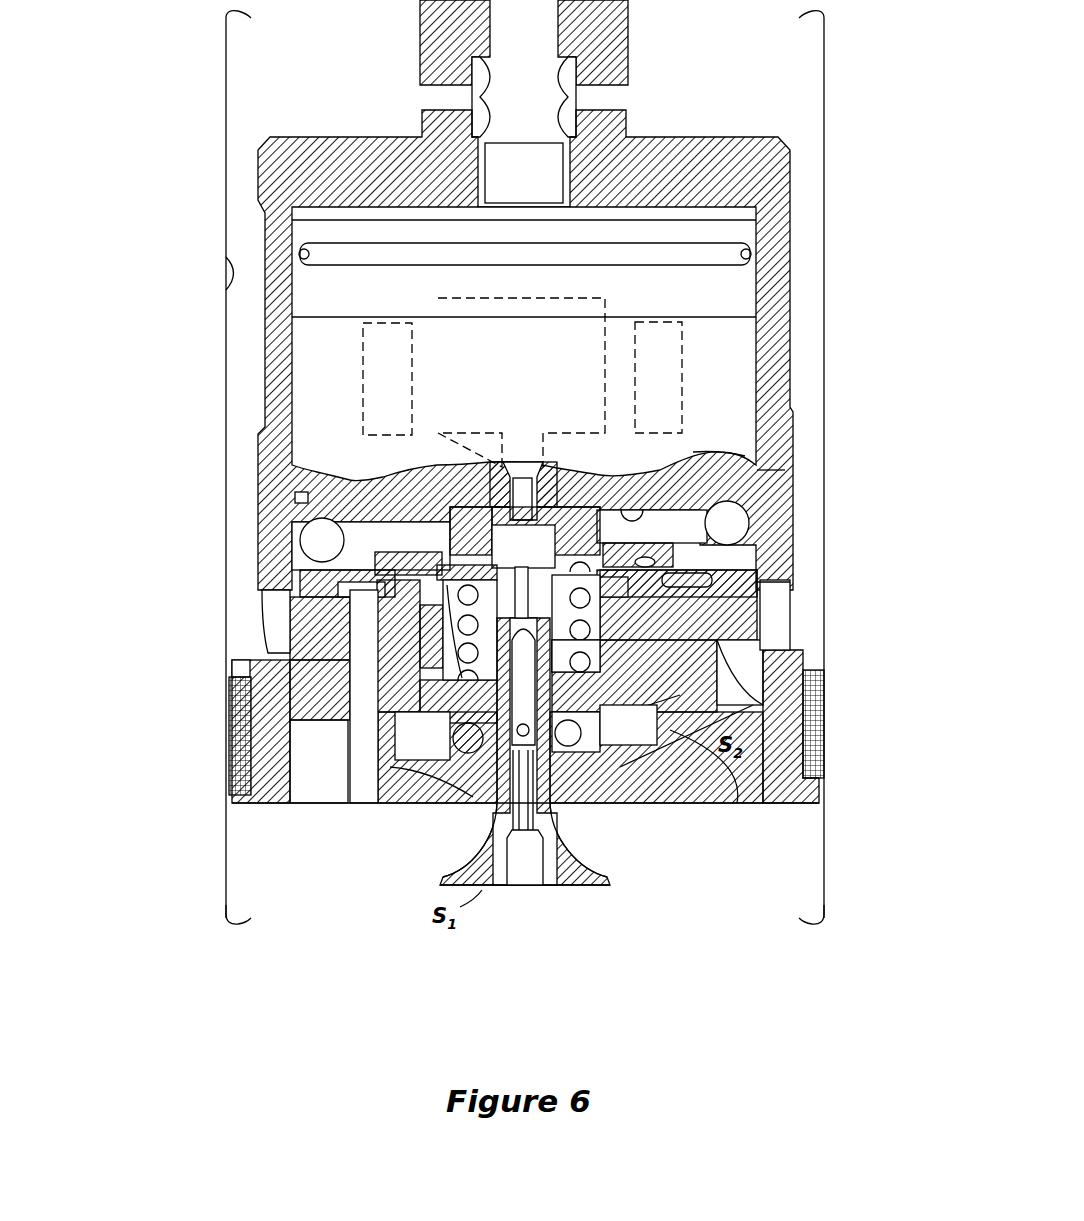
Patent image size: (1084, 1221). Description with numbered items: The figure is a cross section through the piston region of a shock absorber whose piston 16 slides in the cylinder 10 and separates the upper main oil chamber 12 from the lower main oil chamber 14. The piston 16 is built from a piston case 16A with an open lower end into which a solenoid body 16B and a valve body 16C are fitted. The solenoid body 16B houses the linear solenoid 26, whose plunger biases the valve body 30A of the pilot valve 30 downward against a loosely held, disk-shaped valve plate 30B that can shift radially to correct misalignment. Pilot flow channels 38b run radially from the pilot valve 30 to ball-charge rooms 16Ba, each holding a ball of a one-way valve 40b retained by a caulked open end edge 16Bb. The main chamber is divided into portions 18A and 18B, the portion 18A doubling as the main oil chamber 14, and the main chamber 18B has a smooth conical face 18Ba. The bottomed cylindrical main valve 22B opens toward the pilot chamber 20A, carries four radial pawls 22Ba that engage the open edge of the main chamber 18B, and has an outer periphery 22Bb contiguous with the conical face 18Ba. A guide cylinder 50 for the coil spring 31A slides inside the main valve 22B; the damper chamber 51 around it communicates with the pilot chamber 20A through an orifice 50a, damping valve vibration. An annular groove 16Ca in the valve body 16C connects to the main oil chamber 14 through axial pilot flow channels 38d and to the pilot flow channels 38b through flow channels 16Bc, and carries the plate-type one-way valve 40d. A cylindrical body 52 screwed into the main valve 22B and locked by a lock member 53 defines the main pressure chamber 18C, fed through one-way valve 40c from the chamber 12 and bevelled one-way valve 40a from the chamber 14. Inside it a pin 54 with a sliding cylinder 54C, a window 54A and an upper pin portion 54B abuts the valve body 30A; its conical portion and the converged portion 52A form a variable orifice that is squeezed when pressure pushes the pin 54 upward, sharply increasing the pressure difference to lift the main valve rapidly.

The cylinder 10 is at (226, 262).
The main oil chamber 12 is at (694, 68).
The main oil chamber 14 is at (516, 941).
The piston 16 is at (668, 134).
The piston case 16A is at (787, 236).
The solenoid body 16B is at (757, 556).
The ball-charge room 16Ba is at (757, 512).
The open end edge 16Bb is at (790, 462).
The flow channel 16Bc is at (296, 543).
The valve body 16C is at (755, 805).
The annular groove 16Ca is at (790, 583).
The main chamber portion 18A is at (593, 833).
The main chamber portion 18B is at (635, 745).
The conical face 18Ba is at (737, 805).
The main pressure chamber 18C is at (310, 696).
The pilot chamber 20A is at (400, 665).
The main valve 22B is at (590, 887).
The pawl 22Ba is at (397, 805).
The outer periphery 22Bb is at (473, 822).
The linear solenoid 26 is at (541, 295).
The pilot valve 30 is at (488, 556).
The valve body 30A is at (572, 525).
The valve plate 30B is at (587, 520).
The coil spring 31A is at (232, 672).
The pilot flow channel 38b is at (420, 510).
The pilot flow channel 38d is at (358, 805).
The one-way valve 40a is at (453, 735).
The one-way valve 40b is at (745, 522).
The one-way valve 40c is at (577, 790).
The one-way valve 40d is at (440, 625).
The guide cylinder 50 is at (395, 575).
The orifice 50a is at (735, 580).
The damper chamber 51 is at (718, 458).
The cylindrical body 52 is at (657, 702).
The converged portion 52A is at (450, 553).
The lock member 53 is at (547, 880).
The pin 54 is at (753, 703).
The window 54A is at (640, 645).
The pin portion 54B is at (787, 615).
The cylinder 54C is at (807, 730).